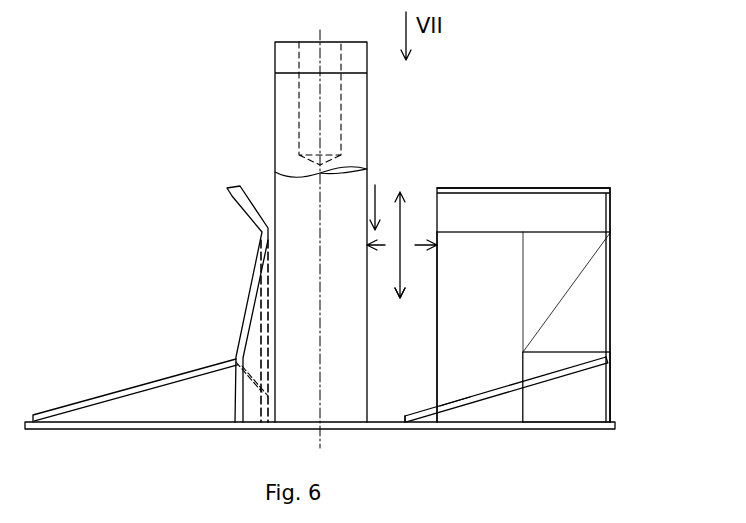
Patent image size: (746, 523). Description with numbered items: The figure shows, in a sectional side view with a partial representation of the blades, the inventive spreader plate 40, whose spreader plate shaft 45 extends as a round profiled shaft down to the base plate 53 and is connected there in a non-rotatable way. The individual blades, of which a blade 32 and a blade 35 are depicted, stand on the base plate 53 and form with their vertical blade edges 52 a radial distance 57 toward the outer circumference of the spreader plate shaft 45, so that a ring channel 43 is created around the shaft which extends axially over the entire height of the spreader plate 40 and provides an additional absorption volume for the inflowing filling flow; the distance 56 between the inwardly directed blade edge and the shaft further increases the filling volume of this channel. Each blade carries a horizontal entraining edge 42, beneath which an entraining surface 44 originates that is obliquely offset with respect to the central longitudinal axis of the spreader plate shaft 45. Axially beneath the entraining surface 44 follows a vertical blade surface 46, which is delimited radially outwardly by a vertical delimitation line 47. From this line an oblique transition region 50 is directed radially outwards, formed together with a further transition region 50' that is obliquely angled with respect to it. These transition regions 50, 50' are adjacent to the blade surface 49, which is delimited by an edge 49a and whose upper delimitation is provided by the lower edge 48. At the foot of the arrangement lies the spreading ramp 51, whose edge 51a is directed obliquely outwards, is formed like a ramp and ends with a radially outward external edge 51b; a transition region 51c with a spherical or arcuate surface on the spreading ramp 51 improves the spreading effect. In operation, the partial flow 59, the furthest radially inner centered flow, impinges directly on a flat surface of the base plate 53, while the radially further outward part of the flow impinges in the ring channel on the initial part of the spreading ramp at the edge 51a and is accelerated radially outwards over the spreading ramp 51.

The blade 32 is at (596, 218).
The blade 35 is at (227, 196).
The spreader plate 40 is at (469, 83).
The entraining edge 42 is at (553, 188).
The ring channel 43 is at (400, 245).
The entraining surface 44 is at (510, 208).
The spreader plate shaft 45 is at (350, 200).
The vertical blade surface 46 is at (453, 247).
The vertical delimitation line 47 is at (523, 260).
The lower edge 48 is at (570, 232).
The blade surface 49 is at (562, 367).
The edge 49a is at (563, 350).
The transition region 50 is at (426, 286).
The further transition region 50' is at (629, 288).
The spreading ramp 51 is at (88, 402).
The edge 51a is at (405, 417).
The external edge 51b is at (606, 368).
The transition region 51c is at (457, 397).
The vertical blade edge 52 is at (442, 278).
The base plate 53 is at (378, 429).
The distance 56 is at (268, 307).
The radial distance 57 is at (395, 300).
The partial flow 59 is at (384, 203).